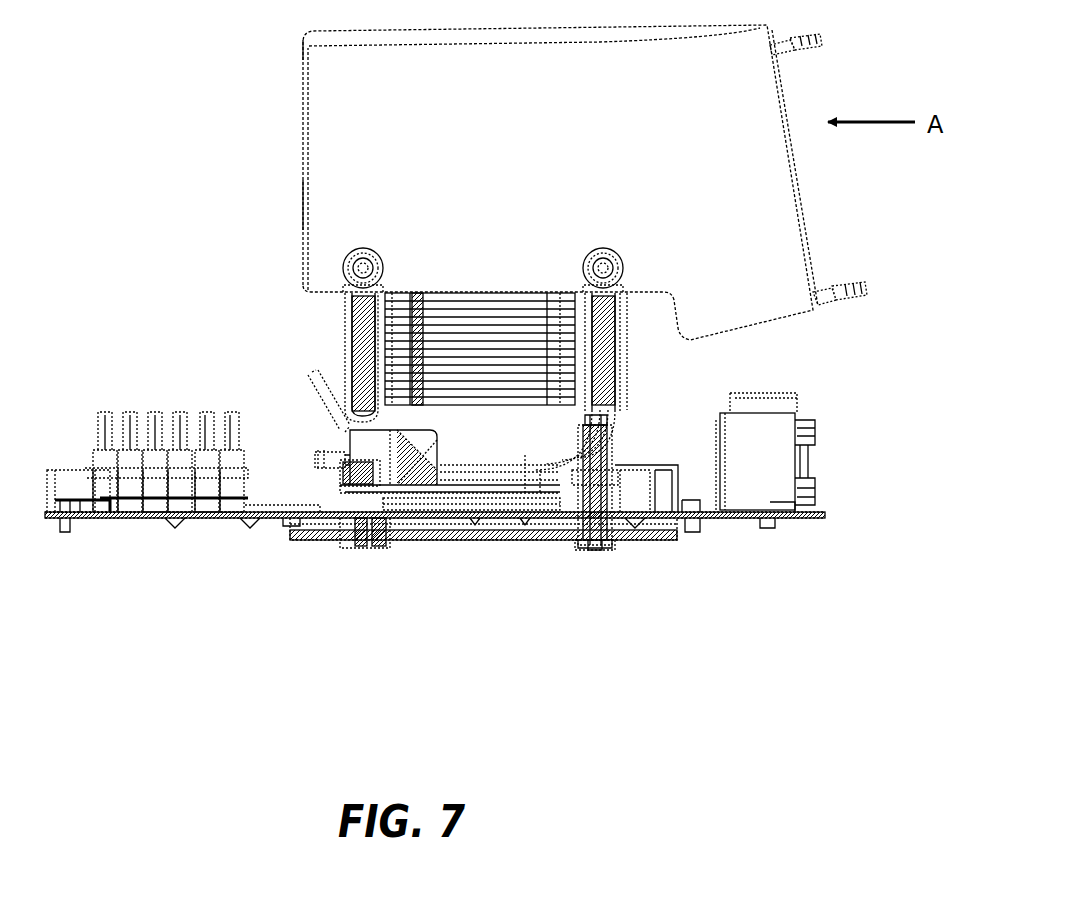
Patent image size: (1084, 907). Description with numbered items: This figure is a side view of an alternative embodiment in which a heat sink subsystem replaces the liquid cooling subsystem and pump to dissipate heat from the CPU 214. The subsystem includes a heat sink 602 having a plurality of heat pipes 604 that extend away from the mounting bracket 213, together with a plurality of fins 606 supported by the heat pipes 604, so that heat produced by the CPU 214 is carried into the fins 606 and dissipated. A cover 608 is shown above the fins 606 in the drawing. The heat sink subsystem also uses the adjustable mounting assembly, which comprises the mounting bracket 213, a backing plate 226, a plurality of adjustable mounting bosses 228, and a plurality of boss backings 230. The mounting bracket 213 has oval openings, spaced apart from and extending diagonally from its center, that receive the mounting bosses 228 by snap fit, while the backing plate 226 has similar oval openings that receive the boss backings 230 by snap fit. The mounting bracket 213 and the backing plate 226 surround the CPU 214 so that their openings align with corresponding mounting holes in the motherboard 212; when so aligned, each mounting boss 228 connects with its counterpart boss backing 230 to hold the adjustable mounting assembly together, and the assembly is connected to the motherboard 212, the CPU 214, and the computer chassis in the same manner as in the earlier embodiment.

The heat sink 602 is at (385, 372).
The heat pipes 604 is at (560, 425).
The fins 606 is at (395, 318).
The cover 608 is at (806, 220).
The motherboard 212 is at (714, 522).
The mounting bracket 213 is at (436, 437).
The CPU 214 is at (430, 500).
The backing plate 226 is at (461, 542).
The adjustable mounting bosses 228 is at (370, 435).
The boss backings 230 is at (373, 522).